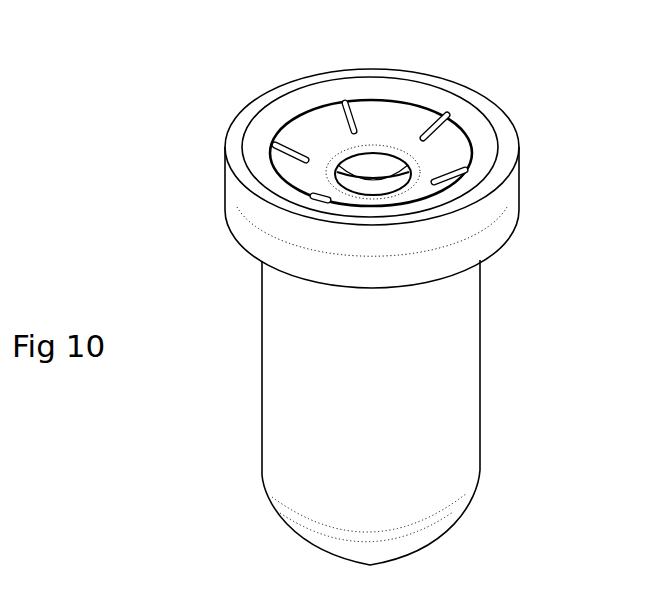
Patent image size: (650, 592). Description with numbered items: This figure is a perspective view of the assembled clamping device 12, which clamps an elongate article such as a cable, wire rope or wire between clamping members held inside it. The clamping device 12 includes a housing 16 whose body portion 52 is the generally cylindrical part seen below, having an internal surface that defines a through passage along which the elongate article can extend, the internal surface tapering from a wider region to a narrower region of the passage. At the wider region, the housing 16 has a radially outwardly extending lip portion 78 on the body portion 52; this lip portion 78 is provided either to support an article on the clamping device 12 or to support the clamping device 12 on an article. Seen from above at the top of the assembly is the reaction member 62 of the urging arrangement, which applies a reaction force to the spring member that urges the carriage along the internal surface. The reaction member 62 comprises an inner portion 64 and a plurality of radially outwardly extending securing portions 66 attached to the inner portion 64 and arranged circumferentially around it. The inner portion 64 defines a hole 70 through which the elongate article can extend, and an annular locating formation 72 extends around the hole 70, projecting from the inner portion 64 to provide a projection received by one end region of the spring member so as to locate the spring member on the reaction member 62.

The clamping device 12 is at (380, 289).
The housing 16 is at (322, 378).
The body portion 52 is at (447, 472).
The reaction member 62 is at (383, 122).
The inner portion 64 is at (412, 168).
The securing portions 66 is at (308, 128).
The hole 70 is at (347, 157).
The annular locating formation 72 is at (382, 170).
The lip portion 78 is at (258, 238).